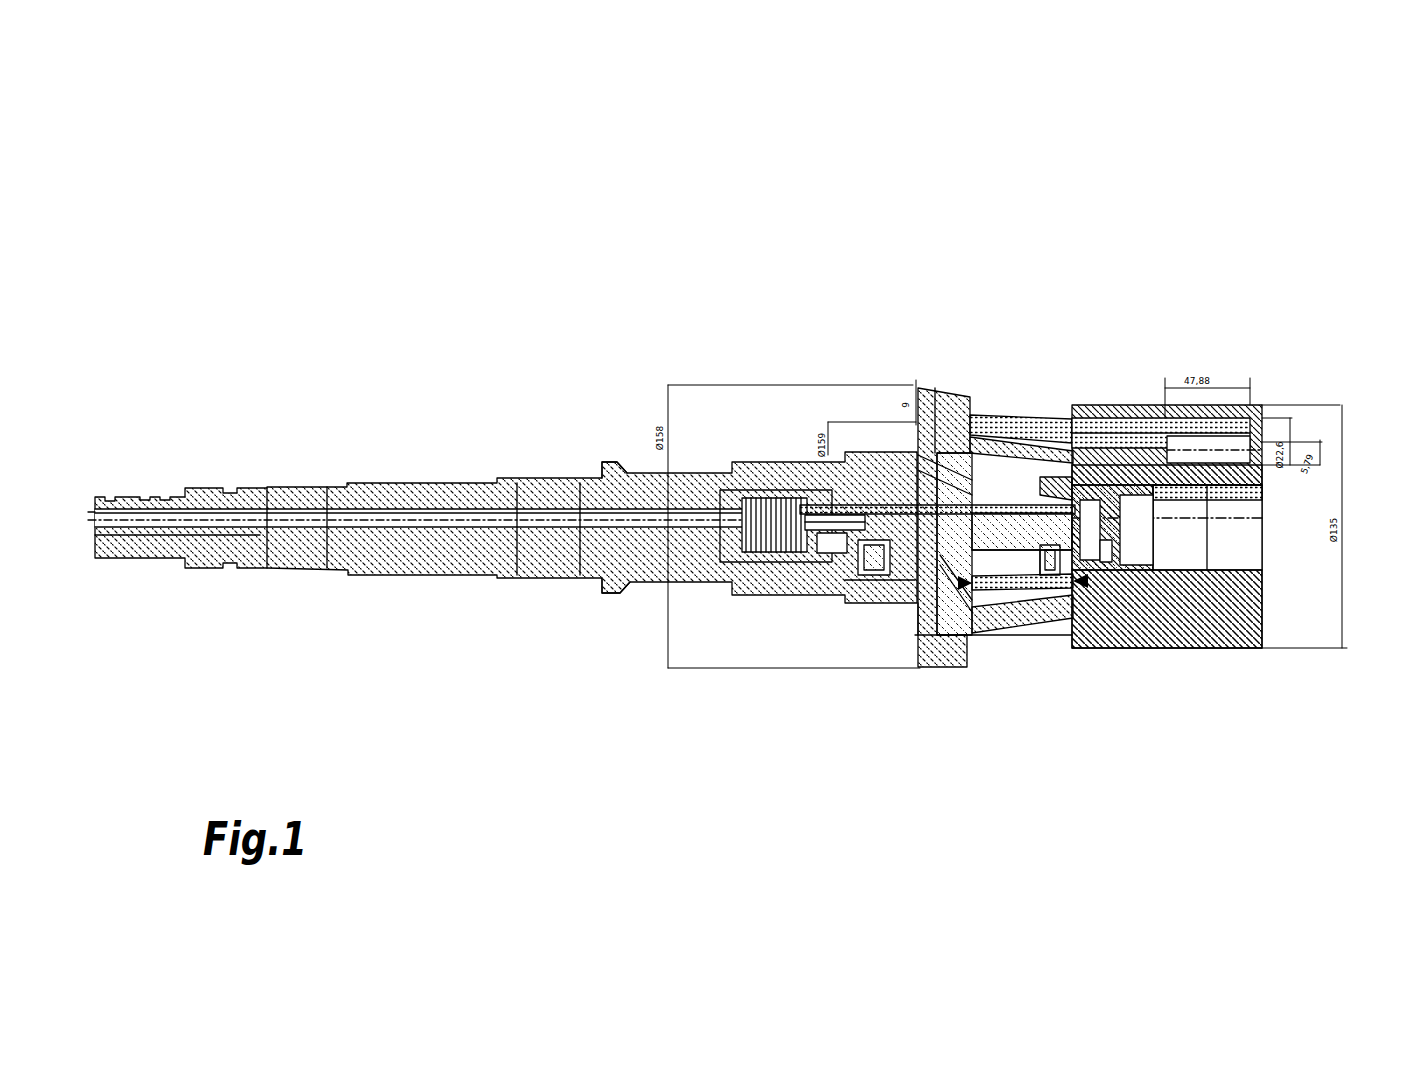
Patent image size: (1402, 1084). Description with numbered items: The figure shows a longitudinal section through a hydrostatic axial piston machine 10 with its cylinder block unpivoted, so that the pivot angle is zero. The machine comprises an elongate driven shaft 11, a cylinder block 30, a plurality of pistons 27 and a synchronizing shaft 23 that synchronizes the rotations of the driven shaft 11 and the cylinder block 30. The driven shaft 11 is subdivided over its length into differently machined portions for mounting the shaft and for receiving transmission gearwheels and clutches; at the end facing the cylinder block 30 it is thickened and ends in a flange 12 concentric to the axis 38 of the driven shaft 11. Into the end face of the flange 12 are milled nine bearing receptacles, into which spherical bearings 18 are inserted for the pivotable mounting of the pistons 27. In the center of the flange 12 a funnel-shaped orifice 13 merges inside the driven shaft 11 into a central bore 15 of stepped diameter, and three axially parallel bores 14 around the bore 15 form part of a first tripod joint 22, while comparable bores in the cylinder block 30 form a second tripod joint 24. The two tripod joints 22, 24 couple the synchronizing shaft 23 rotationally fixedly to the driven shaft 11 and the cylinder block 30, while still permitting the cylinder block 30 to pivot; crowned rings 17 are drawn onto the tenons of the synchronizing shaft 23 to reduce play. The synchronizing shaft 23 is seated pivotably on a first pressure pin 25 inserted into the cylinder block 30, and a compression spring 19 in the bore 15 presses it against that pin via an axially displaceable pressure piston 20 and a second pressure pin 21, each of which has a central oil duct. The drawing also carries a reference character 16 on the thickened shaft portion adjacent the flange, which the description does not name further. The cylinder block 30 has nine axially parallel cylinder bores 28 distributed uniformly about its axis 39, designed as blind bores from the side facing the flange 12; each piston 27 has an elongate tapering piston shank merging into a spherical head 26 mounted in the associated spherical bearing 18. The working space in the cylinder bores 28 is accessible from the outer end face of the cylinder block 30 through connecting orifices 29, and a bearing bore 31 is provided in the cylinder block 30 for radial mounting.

The hydrostatic axial piston machine 10 is at (492, 322).
The driven shaft 11 is at (527, 577).
The flange 12 is at (942, 655).
The funnel-shaped orifice 13 is at (975, 625).
The axially parallel bores 14 is at (832, 572).
The central bore 15 is at (726, 542).
The flange 16 is at (628, 472).
The rings 17 is at (858, 548).
The spherical bearings 18 is at (940, 392).
The compression spring 19 is at (760, 503).
The pressure piston 20 is at (828, 505).
The second pressure pin 21 is at (845, 528).
The first tripod joint 22 is at (873, 588).
The synchronizing shaft 23 is at (1013, 587).
The second tripod joint 24 is at (1090, 590).
The first pressure pin 25 is at (1107, 533).
The spherical head 26 is at (968, 400).
The pistons 27 is at (1160, 442).
The cylinder bores 28 is at (1207, 440).
The connecting orifices 29 is at (1258, 445).
The cylinder block 30 is at (1250, 617).
The bearing bore 31 is at (1237, 513).
The axis of the driven shaft 38 is at (231, 535).
The axis of the cylinder block 39 is at (1237, 570).